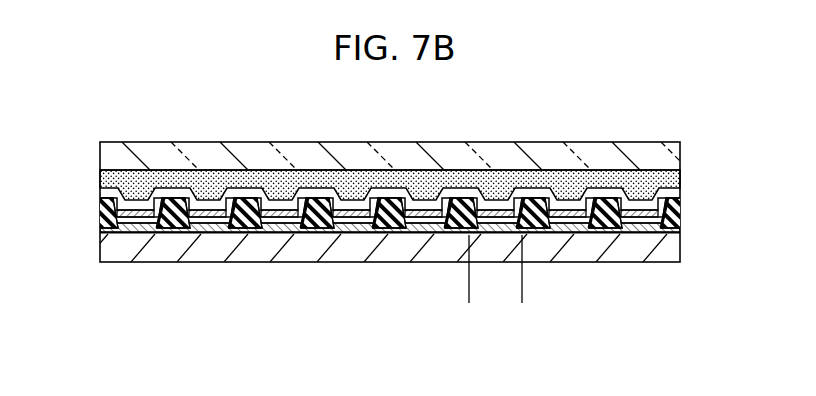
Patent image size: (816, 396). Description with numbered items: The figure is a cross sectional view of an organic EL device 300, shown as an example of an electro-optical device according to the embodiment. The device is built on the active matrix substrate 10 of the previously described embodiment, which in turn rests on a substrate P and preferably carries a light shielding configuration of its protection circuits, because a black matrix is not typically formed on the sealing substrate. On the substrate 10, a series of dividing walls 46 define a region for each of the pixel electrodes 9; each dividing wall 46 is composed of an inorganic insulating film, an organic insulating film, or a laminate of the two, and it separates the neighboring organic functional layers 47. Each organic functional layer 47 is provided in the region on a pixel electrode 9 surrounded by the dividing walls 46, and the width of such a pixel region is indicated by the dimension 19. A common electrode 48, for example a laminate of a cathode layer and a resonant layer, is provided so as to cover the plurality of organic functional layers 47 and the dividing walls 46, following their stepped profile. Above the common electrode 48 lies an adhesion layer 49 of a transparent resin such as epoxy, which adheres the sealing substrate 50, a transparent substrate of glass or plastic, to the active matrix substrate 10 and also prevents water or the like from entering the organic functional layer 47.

The organic EL device 300 is at (577, 124).
The sealing substrate 50 is at (682, 148).
The adhesion layer 49 is at (682, 177).
The common electrode 48 is at (682, 193).
The organic functional layer 47 is at (682, 213).
The dividing wall 46 is at (385, 228).
The pixel electrode 9 is at (466, 226).
The pixel pitch 19 is at (522, 288).
The active matrix substrate 10 is at (93, 221).
The substrate P is at (682, 257).